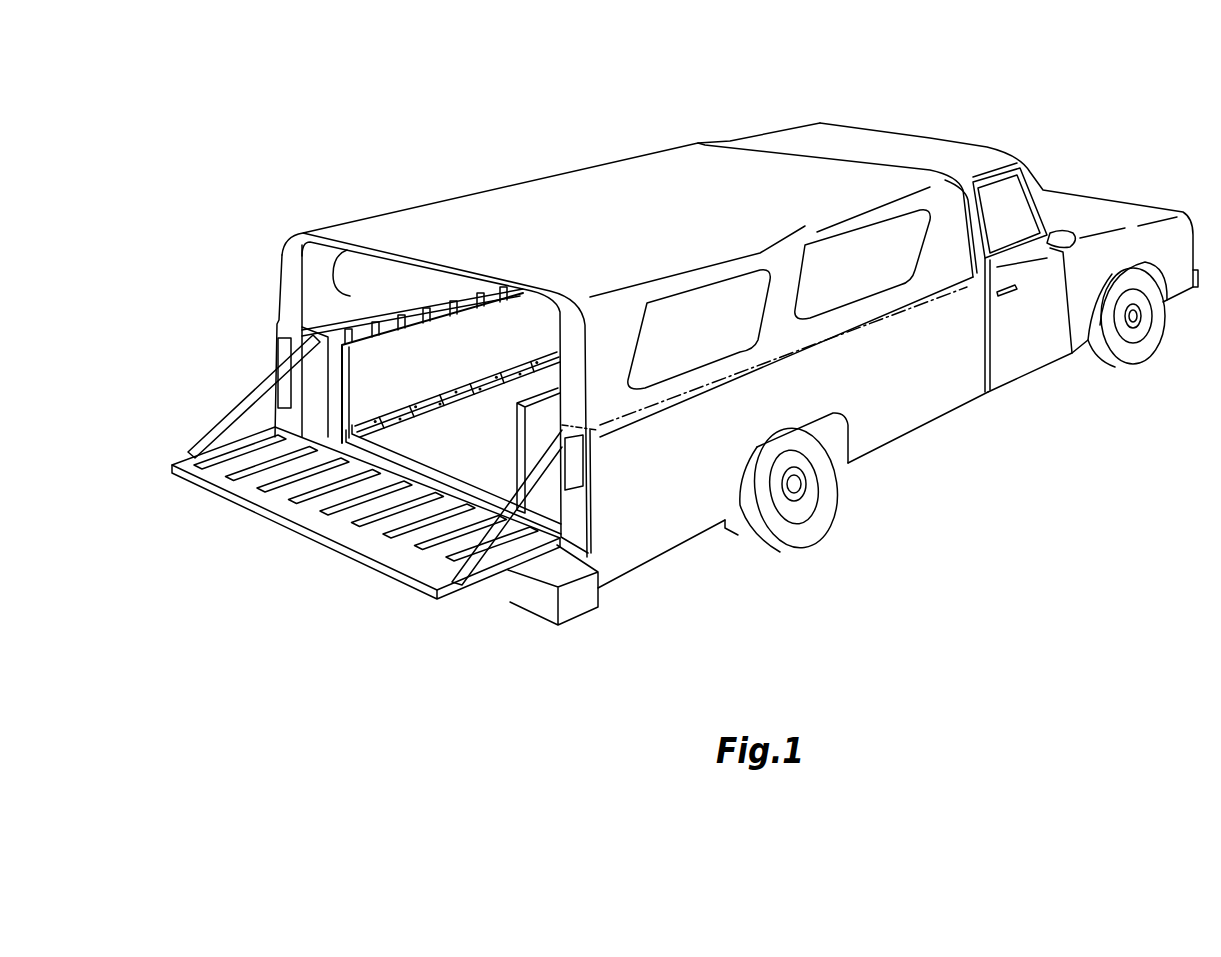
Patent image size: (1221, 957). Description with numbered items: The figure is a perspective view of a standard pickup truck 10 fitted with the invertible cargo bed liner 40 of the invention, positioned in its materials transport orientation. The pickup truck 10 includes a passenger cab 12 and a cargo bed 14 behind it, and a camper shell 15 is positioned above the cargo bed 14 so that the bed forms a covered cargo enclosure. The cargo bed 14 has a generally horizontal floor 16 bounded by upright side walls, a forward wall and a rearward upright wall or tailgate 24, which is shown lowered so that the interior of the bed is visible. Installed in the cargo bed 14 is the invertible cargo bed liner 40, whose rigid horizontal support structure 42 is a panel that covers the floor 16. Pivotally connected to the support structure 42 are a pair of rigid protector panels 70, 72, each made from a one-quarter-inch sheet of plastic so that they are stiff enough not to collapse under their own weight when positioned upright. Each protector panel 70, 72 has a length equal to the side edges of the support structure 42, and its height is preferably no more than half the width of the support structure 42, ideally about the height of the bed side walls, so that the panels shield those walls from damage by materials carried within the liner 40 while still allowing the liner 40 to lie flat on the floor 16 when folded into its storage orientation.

The pickup truck 10 is at (1012, 464).
The passenger cab 12 is at (932, 132).
The camper shell 15 is at (596, 198).
The floor 16 is at (567, 482).
The protector panel 70 is at (407, 353).
The cargo bed 14 is at (318, 412).
The tailgate 24 is at (235, 467).
The invertible cargo bed liner 40 is at (433, 443).
The support structure 42 is at (458, 459).
The protector panel 72 is at (555, 445).